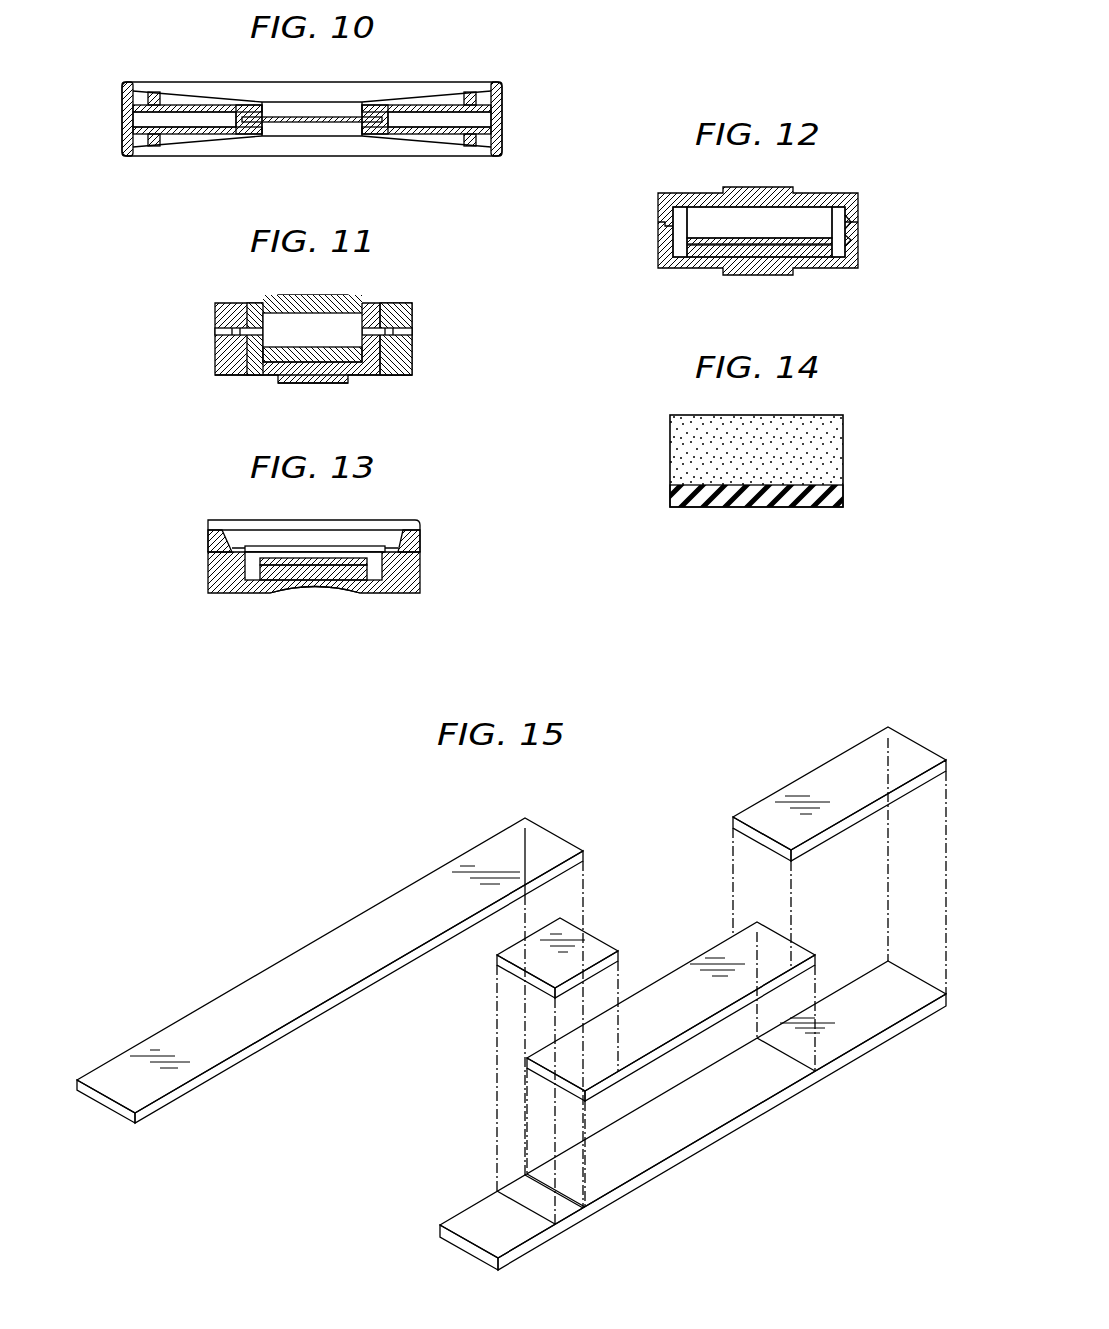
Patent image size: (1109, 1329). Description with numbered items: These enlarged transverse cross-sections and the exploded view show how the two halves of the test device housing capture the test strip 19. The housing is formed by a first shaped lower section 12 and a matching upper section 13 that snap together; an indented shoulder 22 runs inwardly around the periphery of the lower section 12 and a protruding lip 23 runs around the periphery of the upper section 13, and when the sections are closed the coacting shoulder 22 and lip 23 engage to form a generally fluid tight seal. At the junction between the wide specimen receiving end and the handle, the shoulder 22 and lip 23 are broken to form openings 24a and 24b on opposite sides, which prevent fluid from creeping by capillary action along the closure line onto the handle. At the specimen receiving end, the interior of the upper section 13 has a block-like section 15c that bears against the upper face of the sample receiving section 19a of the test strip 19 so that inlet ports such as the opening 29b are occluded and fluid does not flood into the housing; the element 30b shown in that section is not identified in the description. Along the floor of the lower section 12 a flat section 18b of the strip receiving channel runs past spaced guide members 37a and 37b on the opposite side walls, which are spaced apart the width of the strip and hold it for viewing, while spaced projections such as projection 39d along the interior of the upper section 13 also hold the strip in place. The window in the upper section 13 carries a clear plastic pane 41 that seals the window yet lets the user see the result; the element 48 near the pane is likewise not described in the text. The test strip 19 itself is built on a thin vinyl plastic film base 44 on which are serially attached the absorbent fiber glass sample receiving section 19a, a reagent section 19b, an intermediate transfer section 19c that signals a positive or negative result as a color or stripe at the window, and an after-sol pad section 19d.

In FIG. 10, the lower section 12 is at (500, 123).
In FIG. 11, the lower section 12 is at (410, 350).
In FIG. 13, the lower section 12 is at (420, 566).
In FIG. 12, the lower section 12 is at (858, 258).
In FIG. 10, the upper section 13 is at (500, 92).
In FIG. 11, the upper section 13 is at (410, 312).
In FIG. 13, the upper section 13 is at (420, 524).
In FIG. 12, the upper section 13 is at (858, 199).
In FIG. 10, the block-like section 15c is at (368, 103).
In FIG. 11, the flat section 18b is at (305, 380).
In FIG. 10, the test strip 19 is at (352, 124).
In FIG. 11, the test strip 19 is at (335, 356).
In FIG. 12, the test strip 19 is at (815, 252).
In FIG. 14, the test strip 19 is at (857, 443).
In FIG. 15, the test strip 19 is at (293, 862).
In FIG. 14, the sample receiving section 19a is at (672, 435).
In FIG. 15, the sample receiving section 19a is at (253, 988).
In FIG. 15, the reagent section 19b is at (596, 950).
In FIG. 15, the intermediate transfer section 19c is at (692, 963).
In FIG. 13, the after-sol pad section 19d is at (294, 594).
In FIG. 15, the after-sol pad section 19d is at (848, 757).
In FIG. 12, the indented shoulder 22 is at (856, 240).
In FIG. 12, the protruding lip 23 is at (856, 222).
In FIG. 11, the opening 24a is at (218, 331).
In FIG. 11, the opening 24b is at (398, 378).
In FIG. 10, the opening 29b is at (292, 138).
In FIG. 10, the chamber 30b is at (330, 110).
In FIG. 12, the guide member 37a is at (680, 260).
In FIG. 12, the guide member 37b is at (848, 262).
In FIG. 12, the spaced projection 39d is at (703, 213).
In FIG. 13, the clear plastic pane 41 is at (340, 546).
In FIG. 14, the plastic film base 44 is at (672, 495).
In FIG. 15, the plastic film base 44 is at (687, 1152).
In FIG. 13, the stop 48 is at (243, 546).